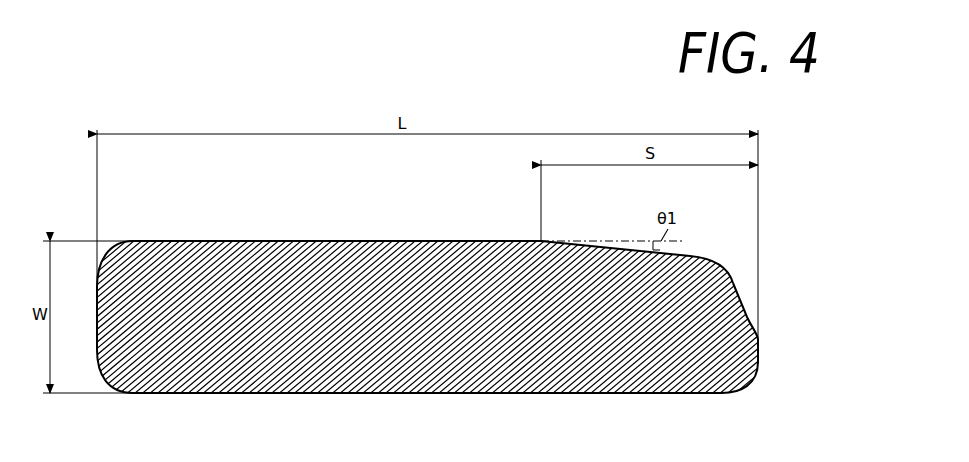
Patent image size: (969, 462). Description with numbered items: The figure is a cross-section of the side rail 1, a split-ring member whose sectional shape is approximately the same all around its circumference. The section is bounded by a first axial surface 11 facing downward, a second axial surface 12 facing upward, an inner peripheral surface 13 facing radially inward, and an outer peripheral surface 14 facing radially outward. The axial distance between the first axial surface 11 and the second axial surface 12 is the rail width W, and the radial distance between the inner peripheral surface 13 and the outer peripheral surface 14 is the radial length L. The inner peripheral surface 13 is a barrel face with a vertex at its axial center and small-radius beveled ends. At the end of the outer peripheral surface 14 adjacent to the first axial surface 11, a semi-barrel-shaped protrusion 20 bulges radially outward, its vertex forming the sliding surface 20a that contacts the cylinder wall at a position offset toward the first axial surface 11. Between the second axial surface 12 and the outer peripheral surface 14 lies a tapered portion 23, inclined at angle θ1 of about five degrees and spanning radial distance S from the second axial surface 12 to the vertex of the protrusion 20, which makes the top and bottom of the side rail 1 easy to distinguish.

The side rail 1 is at (474, 289).
The first axial surface 11 is at (352, 394).
The second axial surface 12 is at (328, 240).
The inner peripheral surface 13 is at (96, 325).
The outer peripheral surface 14 is at (733, 285).
The protrusion 20 is at (759, 370).
The sliding surface 20a is at (758, 349).
The tapered portion 23 is at (617, 250).